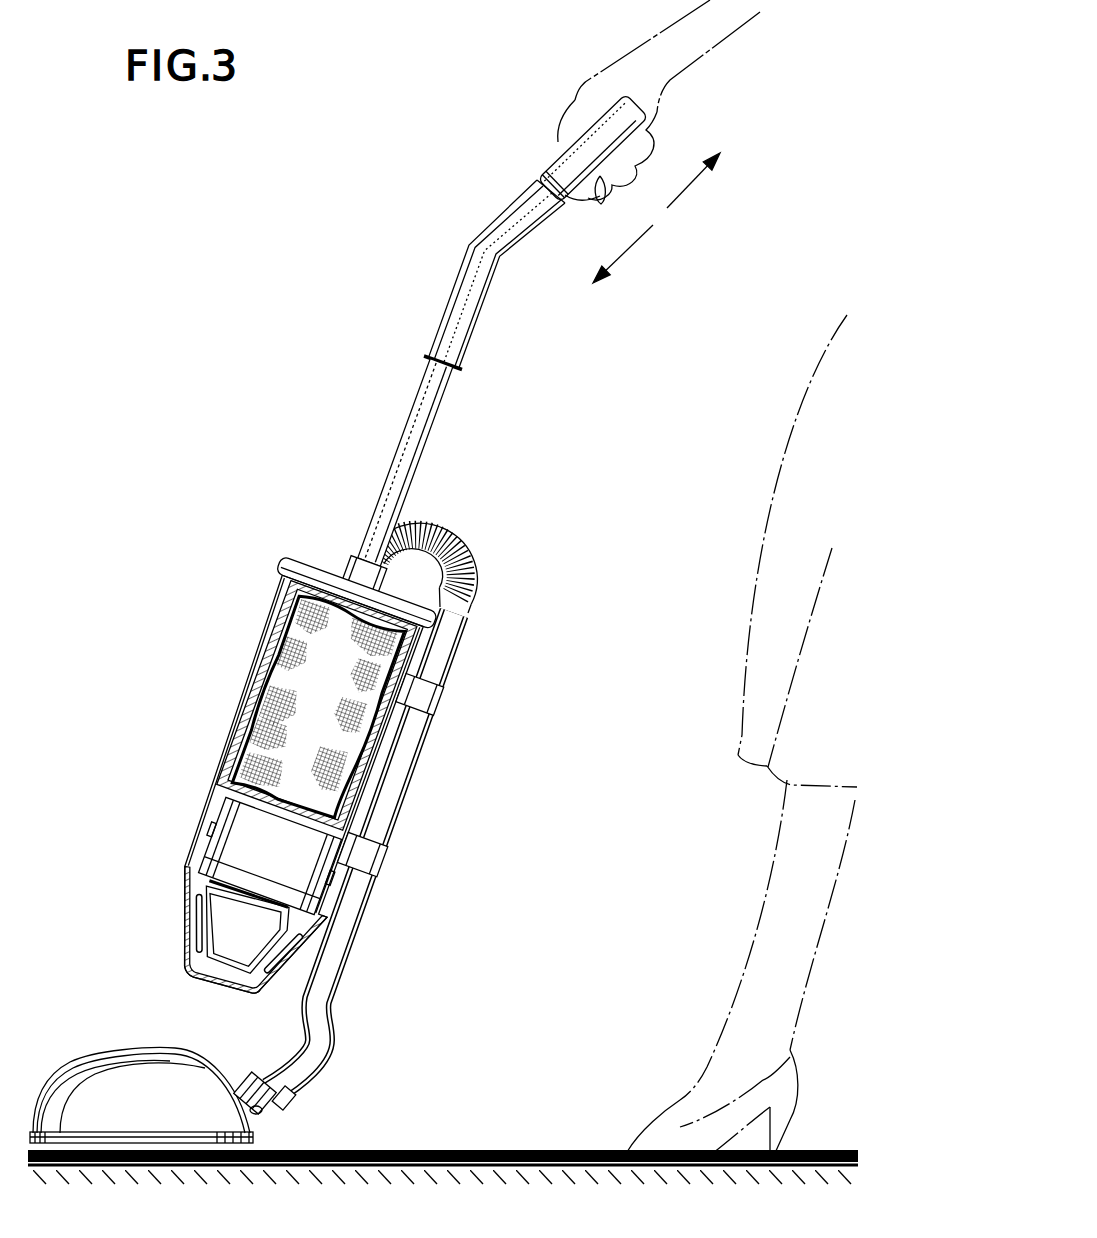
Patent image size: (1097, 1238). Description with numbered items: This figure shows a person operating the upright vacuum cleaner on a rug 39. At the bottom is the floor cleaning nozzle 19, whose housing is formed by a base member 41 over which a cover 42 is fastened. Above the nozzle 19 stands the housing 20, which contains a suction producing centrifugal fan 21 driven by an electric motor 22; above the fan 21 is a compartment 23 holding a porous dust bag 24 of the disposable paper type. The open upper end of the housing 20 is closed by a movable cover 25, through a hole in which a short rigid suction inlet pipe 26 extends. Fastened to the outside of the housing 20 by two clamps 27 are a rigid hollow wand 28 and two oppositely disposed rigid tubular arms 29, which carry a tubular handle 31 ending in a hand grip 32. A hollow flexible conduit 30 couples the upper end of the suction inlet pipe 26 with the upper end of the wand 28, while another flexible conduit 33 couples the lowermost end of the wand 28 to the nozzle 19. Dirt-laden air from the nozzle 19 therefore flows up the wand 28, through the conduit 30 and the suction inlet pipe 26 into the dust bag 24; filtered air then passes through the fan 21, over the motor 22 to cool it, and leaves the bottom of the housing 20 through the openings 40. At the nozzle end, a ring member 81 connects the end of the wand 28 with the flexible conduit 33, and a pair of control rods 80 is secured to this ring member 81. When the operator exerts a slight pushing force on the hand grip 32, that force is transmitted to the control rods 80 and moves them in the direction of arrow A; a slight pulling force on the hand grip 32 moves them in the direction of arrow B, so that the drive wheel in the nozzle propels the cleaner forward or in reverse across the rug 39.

The floor cleaning nozzle 19 is at (179, 1073).
The housing 20 is at (228, 694).
The centrifugal fan 21 is at (236, 828).
The electric motor 22 is at (228, 940).
The compartment 23 is at (280, 642).
The porous dust bag 24 is at (338, 684).
The movable cover 25 is at (298, 568).
The suction inlet pipe 26 is at (352, 574).
The clamps 27 is at (438, 702).
The rigid hollow wand 28 is at (400, 790).
The tubular arms 29 is at (430, 410).
The flexible conduit 30 is at (432, 528).
The tubular handle 31 is at (493, 232).
The hand grip 32 is at (585, 133).
The flexible conduit 33 is at (246, 1080).
The rug 39 is at (358, 1141).
The openings 40 is at (197, 918).
The base member 41 is at (266, 1143).
The cover 42 is at (136, 1060).
The control rods 80 is at (262, 1112).
The ring member 81 is at (284, 1101).
The arrows A is at (623, 254).
The arrows B is at (693, 180).